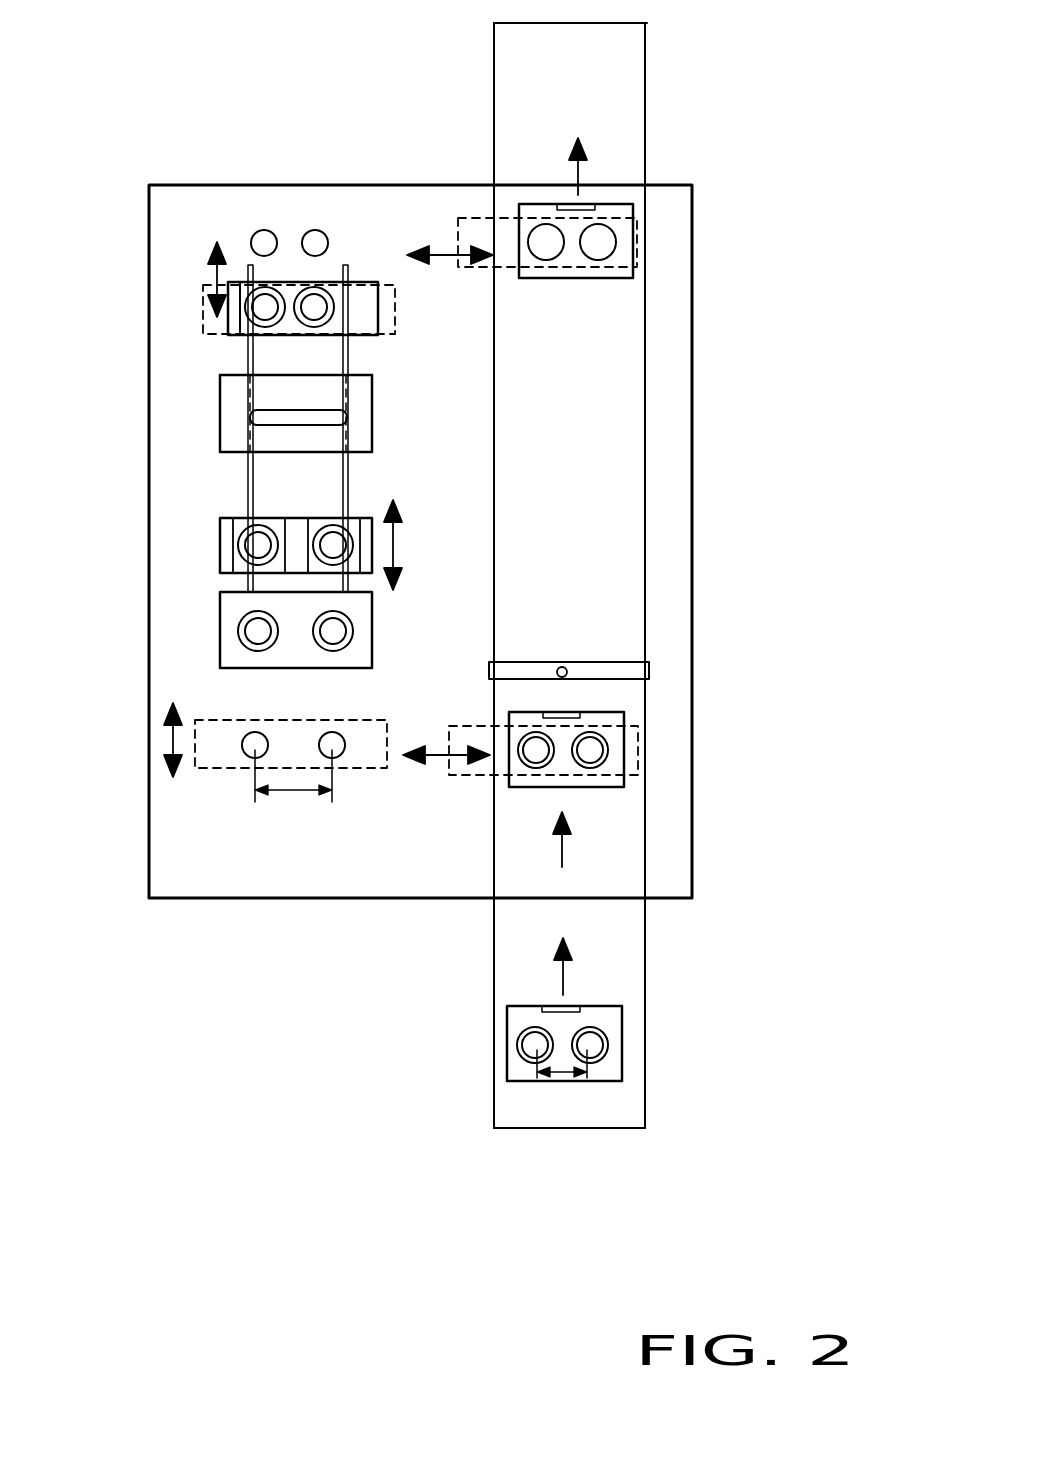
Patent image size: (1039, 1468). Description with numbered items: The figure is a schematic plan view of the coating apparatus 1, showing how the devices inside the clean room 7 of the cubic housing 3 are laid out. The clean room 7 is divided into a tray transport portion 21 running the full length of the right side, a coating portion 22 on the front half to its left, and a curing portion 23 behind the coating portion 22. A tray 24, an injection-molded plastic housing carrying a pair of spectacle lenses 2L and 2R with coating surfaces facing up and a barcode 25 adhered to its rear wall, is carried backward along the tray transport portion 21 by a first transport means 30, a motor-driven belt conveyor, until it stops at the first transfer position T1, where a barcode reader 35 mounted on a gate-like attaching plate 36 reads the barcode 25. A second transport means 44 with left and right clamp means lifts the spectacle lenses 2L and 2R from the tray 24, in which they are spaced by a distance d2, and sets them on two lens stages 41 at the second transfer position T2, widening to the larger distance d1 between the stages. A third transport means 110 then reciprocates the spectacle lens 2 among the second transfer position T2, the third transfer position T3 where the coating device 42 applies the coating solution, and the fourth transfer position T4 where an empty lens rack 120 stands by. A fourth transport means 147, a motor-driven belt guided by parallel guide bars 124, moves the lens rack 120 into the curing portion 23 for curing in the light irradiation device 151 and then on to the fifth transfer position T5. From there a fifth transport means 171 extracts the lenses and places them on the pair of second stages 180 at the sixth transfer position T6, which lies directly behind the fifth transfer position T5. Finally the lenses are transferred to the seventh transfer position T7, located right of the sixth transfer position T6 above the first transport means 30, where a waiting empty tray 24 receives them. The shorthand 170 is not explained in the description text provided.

The coating apparatus 1 is at (856, 66).
The spectacle lens 2 is at (598, 1212).
The left spectacle lens 2L is at (268, 302).
The right spectacle lens 2R is at (320, 313).
The housing 3 is at (697, 170).
The clean room 7 is at (343, 184).
The tray transport portion 21 is at (646, 525).
The coating portion 22 is at (374, 635).
The curing portion 23 is at (373, 393).
The tray 24 is at (634, 212).
The barcode 25 is at (573, 712).
The first transport means 30 is at (646, 947).
The barcode reader 35 is at (567, 668).
The attaching plate 36 is at (503, 672).
The lens stage 41 is at (253, 758).
The coating device 42 is at (222, 662).
The second transport means 44 is at (640, 762).
The third transport means 110 is at (225, 770).
The lens rack 120 is at (222, 570).
The guide bars 124 is at (253, 467).
The fourth transport means 147 is at (247, 492).
The light irradiation device 151 is at (220, 432).
The cutter block 170 is at (300, 246).
The fifth transport means 171 is at (205, 325).
The second stages 180 is at (633, 280).
The first transfer position T1 is at (563, 752).
The second transfer position T2 is at (297, 740).
The third transfer position T3 is at (295, 630).
The fourth transfer position T4 is at (295, 554).
The fifth transfer position T5 is at (242, 344).
The sixth transfer position T6 is at (295, 233).
The seventh transfer position T7 is at (573, 243).
The distance between lens stages d1 is at (293, 799).
The distance between spectacle lenses in tray d2 is at (562, 1091).